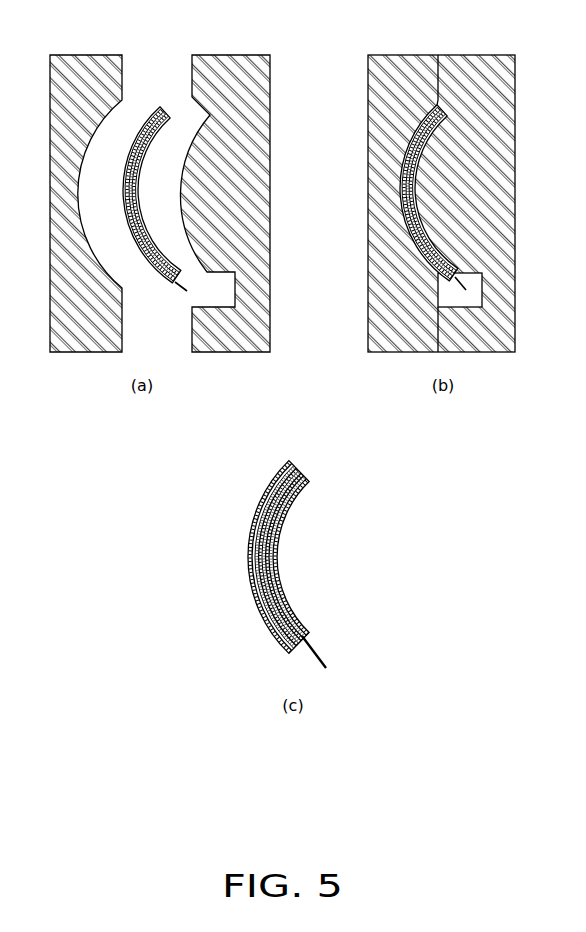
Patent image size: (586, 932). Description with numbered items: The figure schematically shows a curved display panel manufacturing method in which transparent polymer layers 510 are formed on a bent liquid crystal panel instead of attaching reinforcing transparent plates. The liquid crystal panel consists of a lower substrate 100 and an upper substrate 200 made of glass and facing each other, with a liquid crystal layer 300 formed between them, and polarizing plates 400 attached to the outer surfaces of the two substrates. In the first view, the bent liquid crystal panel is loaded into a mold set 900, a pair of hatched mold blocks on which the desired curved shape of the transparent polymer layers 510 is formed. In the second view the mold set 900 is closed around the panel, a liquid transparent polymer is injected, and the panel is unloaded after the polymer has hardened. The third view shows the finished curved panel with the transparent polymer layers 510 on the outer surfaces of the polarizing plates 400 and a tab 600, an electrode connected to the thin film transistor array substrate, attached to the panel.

The lower substrate 100 is at (130, 236).
The upper substrate 200 is at (157, 267).
The liquid crystal layer 300 is at (144, 266).
The polarizing plates 400 is at (152, 139).
The transparent polymer layers 510 is at (271, 483).
The tab 600 is at (328, 656).
The mold set 900 is at (202, 57).